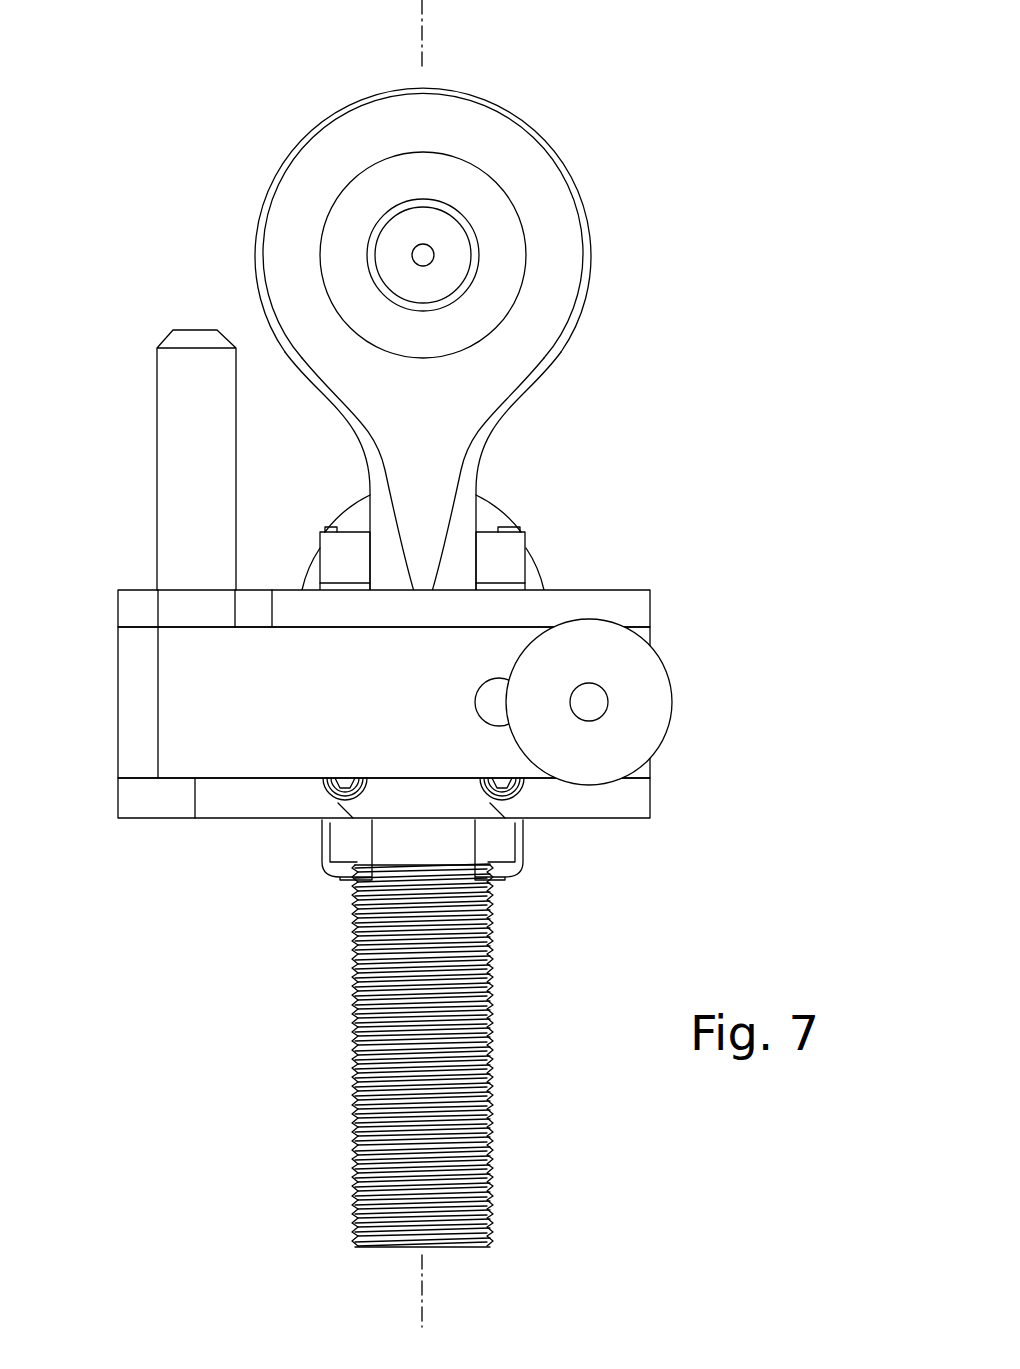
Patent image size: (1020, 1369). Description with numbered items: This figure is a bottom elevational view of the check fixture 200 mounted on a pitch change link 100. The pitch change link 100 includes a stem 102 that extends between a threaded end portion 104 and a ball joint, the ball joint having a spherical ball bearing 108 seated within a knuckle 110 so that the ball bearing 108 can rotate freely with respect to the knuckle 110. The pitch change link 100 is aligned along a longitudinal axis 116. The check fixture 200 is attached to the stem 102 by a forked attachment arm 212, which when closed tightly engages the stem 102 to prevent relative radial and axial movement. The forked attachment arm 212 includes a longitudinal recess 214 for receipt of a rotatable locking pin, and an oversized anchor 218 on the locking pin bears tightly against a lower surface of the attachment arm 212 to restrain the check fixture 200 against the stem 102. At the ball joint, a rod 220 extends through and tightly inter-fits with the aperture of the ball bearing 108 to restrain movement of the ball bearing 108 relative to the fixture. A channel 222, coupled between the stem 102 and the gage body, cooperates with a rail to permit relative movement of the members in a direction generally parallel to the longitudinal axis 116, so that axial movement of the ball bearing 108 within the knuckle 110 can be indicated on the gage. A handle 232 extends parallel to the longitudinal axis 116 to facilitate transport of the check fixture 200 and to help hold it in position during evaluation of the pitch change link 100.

The pitch change link 100 is at (443, 316).
The stem 102 is at (453, 590).
The threaded end portion 104 is at (355, 1080).
The ball bearing 108 is at (505, 237).
The knuckle 110 is at (552, 281).
The longitudinal axis 116 is at (425, 43).
The check fixture 200 is at (425, 608).
The forked attachment arm 212 is at (247, 685).
The longitudinal recess 214 is at (488, 722).
The anchor 218 is at (667, 714).
The rod 220 is at (377, 223).
The channel 222 is at (500, 847).
The handle 232 is at (185, 443).